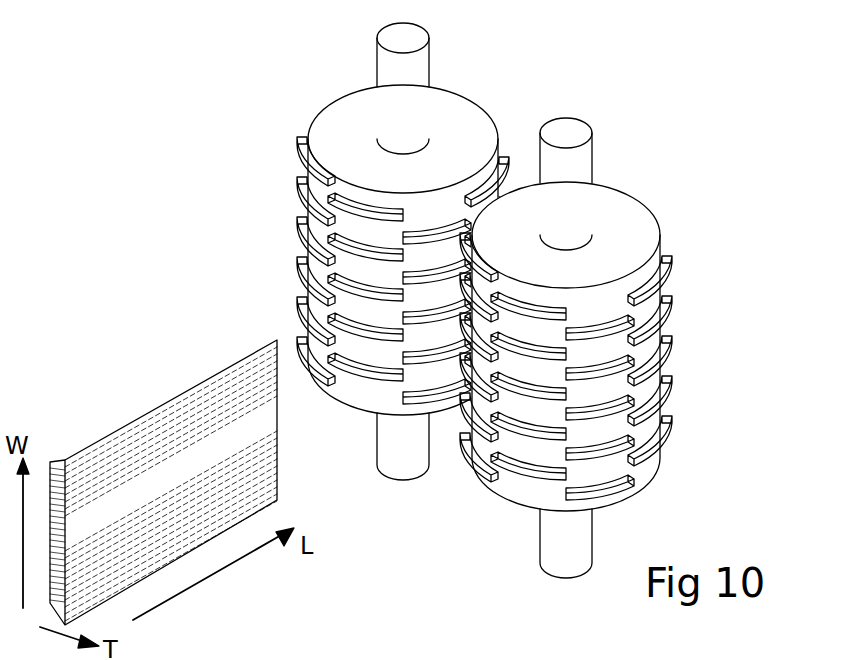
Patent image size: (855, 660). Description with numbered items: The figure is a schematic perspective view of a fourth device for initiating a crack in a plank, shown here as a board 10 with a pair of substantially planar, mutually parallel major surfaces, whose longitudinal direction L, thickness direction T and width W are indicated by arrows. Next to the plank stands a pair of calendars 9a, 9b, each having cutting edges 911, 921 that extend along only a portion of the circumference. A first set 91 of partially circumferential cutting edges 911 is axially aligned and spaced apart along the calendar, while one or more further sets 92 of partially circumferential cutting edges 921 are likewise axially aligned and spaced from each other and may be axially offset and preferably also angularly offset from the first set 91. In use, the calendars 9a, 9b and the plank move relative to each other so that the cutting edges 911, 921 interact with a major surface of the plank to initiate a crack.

The calendar 9a is at (614, 347).
The calendar 9b is at (452, 112).
The first set of partially circumferential cutting edges 91 is at (603, 302).
The cutting edge 911 is at (603, 337).
The further set of partially circumferential cutting edges 92 is at (664, 467).
The cutting edge 921 is at (672, 433).
The sheet 10 is at (147, 435).